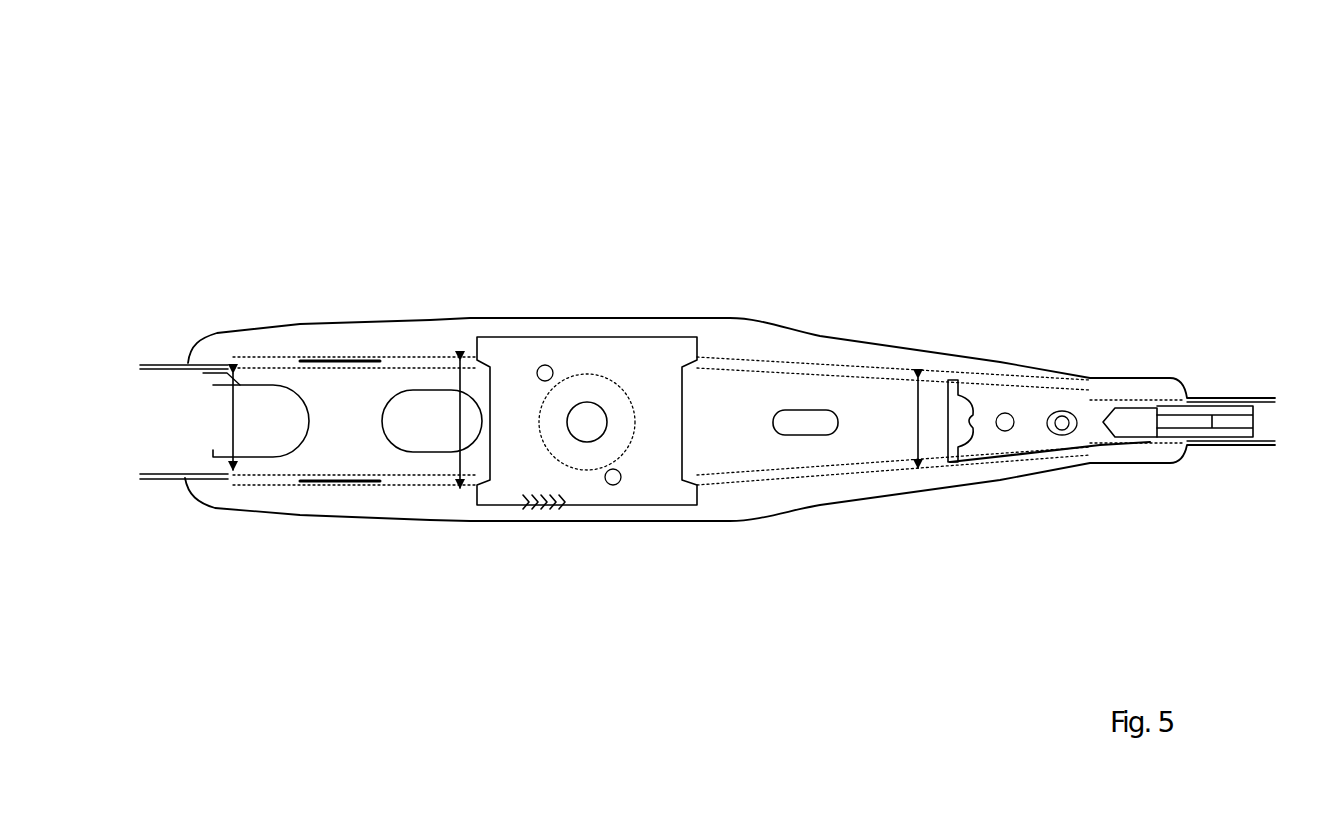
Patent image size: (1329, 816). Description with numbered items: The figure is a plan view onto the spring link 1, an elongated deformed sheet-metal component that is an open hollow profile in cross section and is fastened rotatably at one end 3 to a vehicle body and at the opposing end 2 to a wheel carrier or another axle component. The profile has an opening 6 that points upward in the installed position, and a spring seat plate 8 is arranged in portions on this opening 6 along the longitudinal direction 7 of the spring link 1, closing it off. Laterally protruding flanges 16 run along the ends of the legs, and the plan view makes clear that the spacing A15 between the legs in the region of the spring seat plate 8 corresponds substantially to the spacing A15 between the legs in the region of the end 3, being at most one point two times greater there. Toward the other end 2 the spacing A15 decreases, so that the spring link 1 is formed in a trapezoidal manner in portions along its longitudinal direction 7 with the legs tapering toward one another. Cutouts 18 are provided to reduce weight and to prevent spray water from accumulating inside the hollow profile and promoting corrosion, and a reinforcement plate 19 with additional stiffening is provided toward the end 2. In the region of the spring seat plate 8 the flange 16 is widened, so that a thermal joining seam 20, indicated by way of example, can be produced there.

The spring link 1 is at (233, 143).
The end 2 is at (1308, 434).
The end 3 is at (162, 434).
The opening 6 is at (738, 427).
The longitudinal direction 7 is at (1003, 580).
The spring seat plate 8 is at (632, 358).
The flange 16 is at (360, 335).
The cutouts 18 is at (425, 445).
The reinforcement plate 19 is at (1028, 427).
The thermal joining seam 20 is at (543, 509).
The spacing between the legs A15 is at (234, 415).